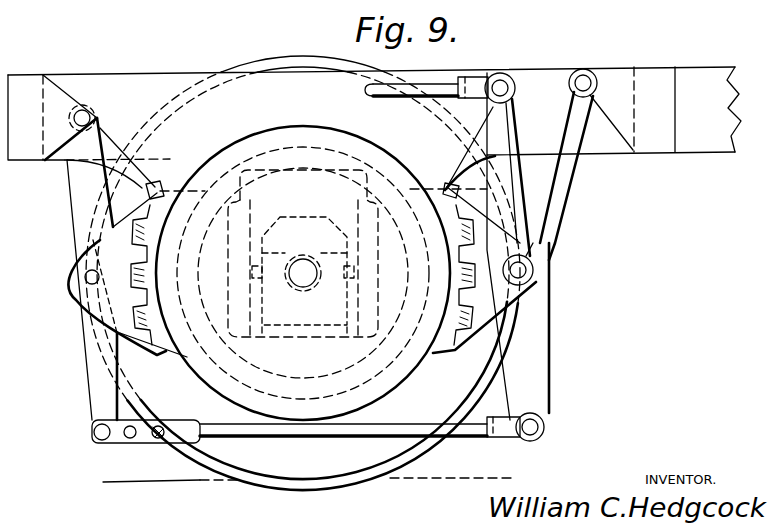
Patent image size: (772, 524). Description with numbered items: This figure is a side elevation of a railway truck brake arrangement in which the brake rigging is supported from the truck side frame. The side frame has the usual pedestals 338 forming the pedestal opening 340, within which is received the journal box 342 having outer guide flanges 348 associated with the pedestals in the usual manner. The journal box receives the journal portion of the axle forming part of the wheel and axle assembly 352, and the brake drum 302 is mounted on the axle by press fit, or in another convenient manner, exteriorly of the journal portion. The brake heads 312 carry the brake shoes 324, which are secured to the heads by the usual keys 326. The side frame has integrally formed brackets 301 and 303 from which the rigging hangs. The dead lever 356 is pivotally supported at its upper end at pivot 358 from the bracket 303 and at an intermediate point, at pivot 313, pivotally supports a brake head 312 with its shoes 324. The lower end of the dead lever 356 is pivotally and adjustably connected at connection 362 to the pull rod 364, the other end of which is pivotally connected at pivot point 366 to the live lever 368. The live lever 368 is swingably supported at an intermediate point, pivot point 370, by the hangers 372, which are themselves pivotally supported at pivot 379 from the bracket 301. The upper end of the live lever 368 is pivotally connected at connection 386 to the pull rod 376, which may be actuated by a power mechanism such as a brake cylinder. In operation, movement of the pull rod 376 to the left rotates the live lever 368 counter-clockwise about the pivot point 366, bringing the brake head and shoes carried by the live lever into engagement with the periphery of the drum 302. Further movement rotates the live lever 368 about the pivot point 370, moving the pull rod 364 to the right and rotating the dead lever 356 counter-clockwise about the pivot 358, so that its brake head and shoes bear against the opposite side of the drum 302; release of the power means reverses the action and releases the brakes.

The bracket 301 is at (617, 124).
The brake drum 302 is at (372, 397).
The bracket 303 is at (57, 93).
The brake head 312 is at (148, 340).
The pivot point 313 is at (92, 280).
The brake shoe 324 is at (185, 190).
The key 326 is at (157, 188).
The pedestal 338 is at (378, 350).
The pedestal opening 340 is at (318, 188).
The journal box 342 is at (262, 225).
The outer guide flange 348 is at (240, 273).
The wheel and axle assembly 352 is at (277, 485).
The dead lever 356 is at (95, 383).
The pivot 358 is at (80, 112).
The pivotal and adjustable connection 362 is at (92, 444).
The pull rod 364 is at (258, 440).
The pivot point 366 is at (548, 412).
The live lever 368 is at (528, 338).
The pivot point 370 is at (535, 270).
The hanger 372 is at (553, 187).
The pull rod 376 is at (413, 96).
The pivot 379 is at (589, 78).
The pivotal connection 386 is at (500, 74).